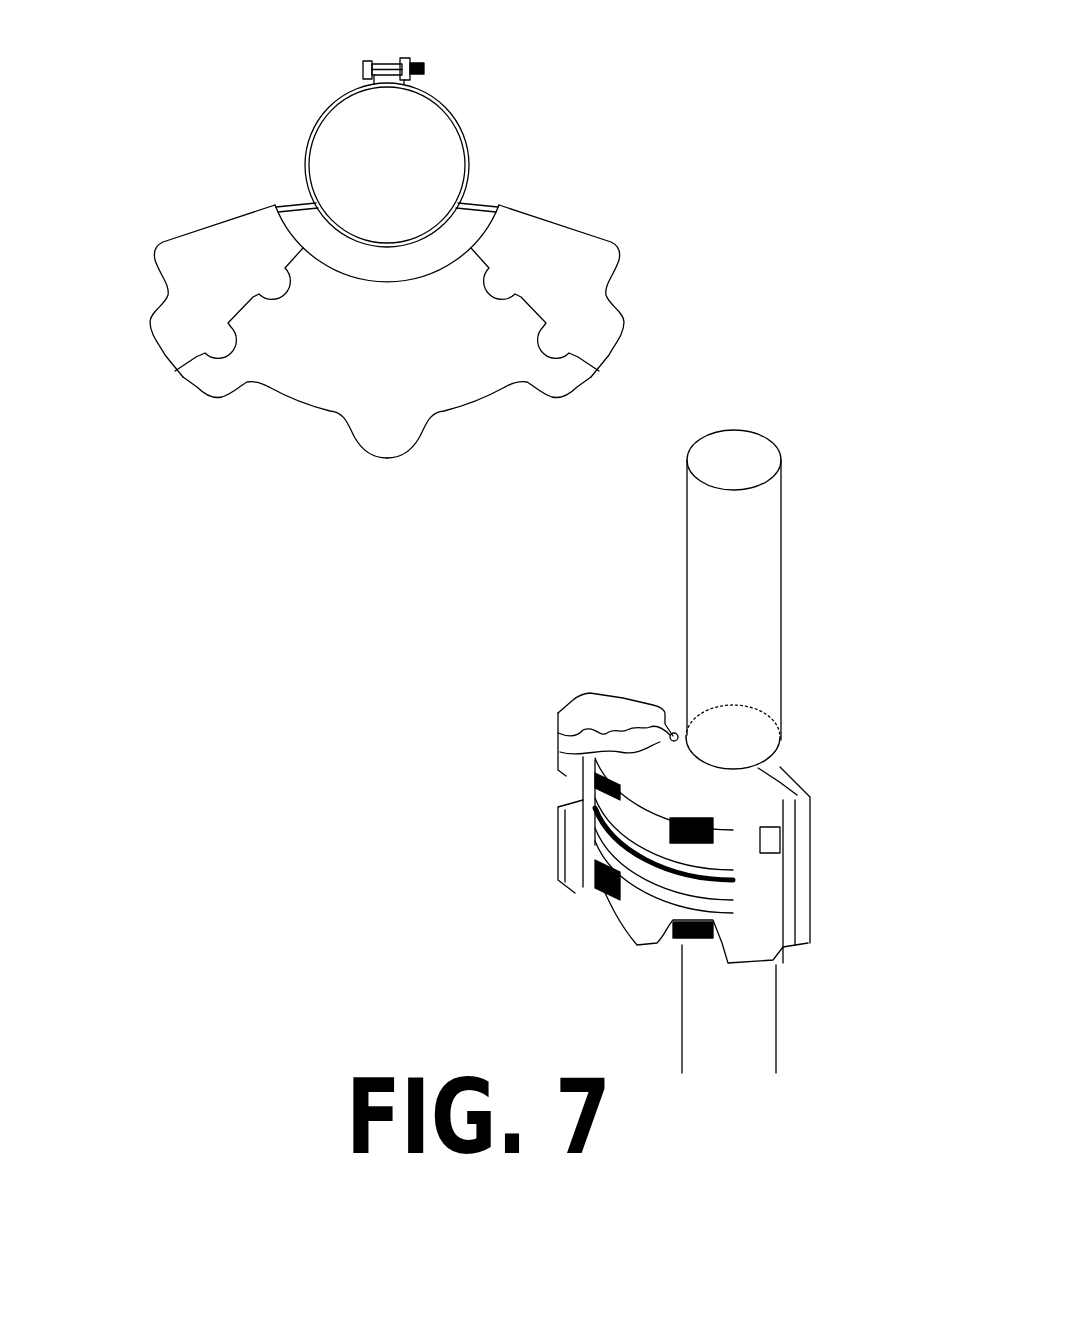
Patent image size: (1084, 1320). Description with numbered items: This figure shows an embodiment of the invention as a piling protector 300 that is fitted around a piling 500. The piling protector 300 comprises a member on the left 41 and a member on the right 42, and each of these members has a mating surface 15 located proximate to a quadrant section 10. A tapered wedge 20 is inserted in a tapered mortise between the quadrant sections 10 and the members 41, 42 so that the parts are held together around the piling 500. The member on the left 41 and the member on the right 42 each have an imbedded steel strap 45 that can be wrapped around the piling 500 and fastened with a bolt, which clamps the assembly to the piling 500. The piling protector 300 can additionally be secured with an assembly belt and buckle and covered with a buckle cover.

The quadrant section 10 is at (387, 482).
The mating surface 15 is at (170, 378).
The tapered wedge 20 is at (758, 875).
The member on the left 41 is at (167, 228).
The member on the right 42 is at (630, 296).
The imbedded steel strap 45 is at (480, 172).
The piling protector 300 is at (649, 875).
The piling 500 is at (545, 580).